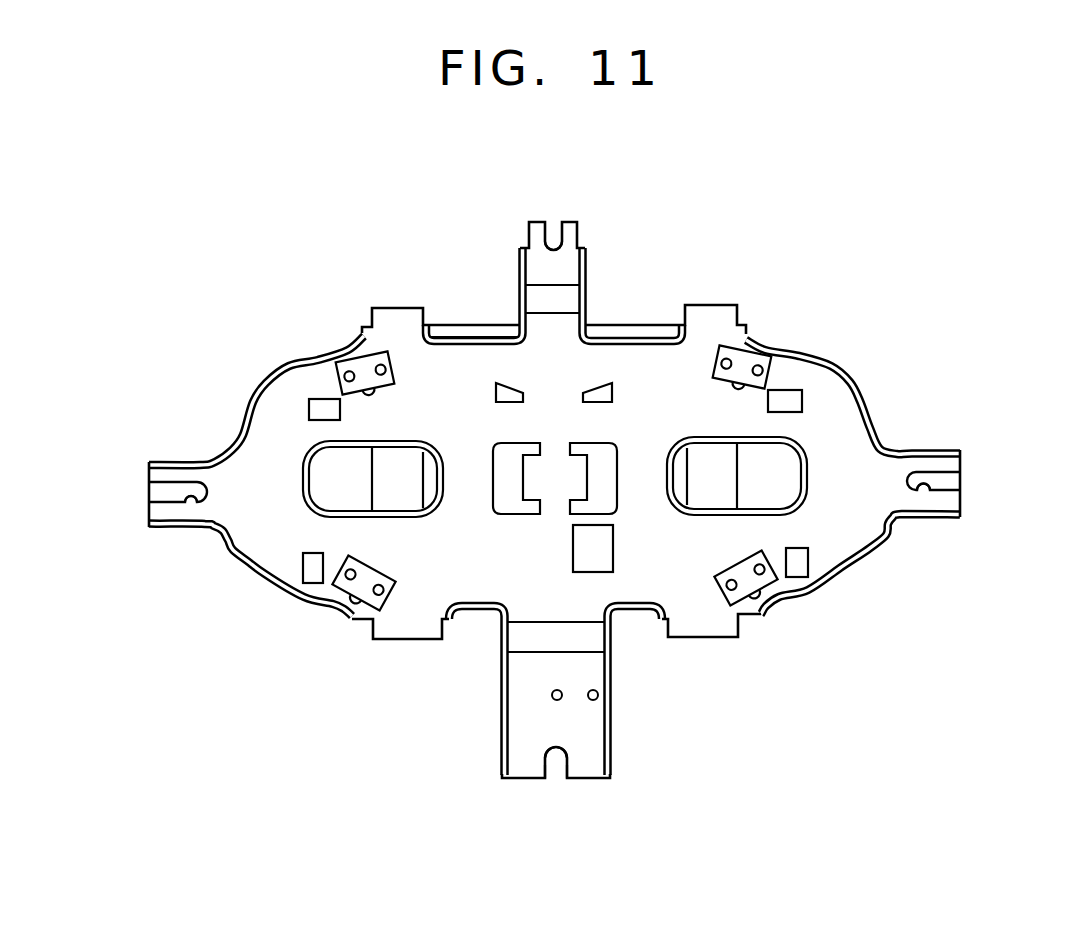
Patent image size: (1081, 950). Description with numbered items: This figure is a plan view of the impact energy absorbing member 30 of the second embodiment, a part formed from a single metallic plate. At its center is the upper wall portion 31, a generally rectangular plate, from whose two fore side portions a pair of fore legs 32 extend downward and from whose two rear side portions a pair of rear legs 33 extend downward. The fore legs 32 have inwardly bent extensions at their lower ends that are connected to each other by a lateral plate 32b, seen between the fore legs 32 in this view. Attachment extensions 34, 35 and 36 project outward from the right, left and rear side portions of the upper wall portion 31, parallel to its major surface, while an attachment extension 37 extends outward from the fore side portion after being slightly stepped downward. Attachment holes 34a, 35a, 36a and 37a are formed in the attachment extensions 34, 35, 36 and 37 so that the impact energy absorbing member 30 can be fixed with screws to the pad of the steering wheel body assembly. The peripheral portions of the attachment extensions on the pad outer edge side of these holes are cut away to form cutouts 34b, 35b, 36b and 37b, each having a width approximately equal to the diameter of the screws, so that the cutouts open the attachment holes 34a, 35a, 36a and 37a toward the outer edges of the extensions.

The impact energy absorbing member 30 is at (857, 238).
The upper wall portion 31 is at (792, 372).
The fore legs 32 is at (392, 307).
The lateral plate 32b is at (473, 333).
The rear legs 33 is at (410, 641).
The attachment extension 34 is at (928, 470).
The attachment hole 34a is at (928, 492).
The cutout 34b is at (948, 484).
The attachment extension 35 is at (170, 515).
The attachment hole 35a is at (187, 506).
The cutout 35b is at (160, 490).
The attachment extension 36 is at (517, 740).
The attachment hole 36a is at (553, 782).
The cutout 36b is at (563, 772).
The attachment extension 37 is at (568, 262).
The attachment hole 37a is at (546, 246).
The cutout 37b is at (553, 250).